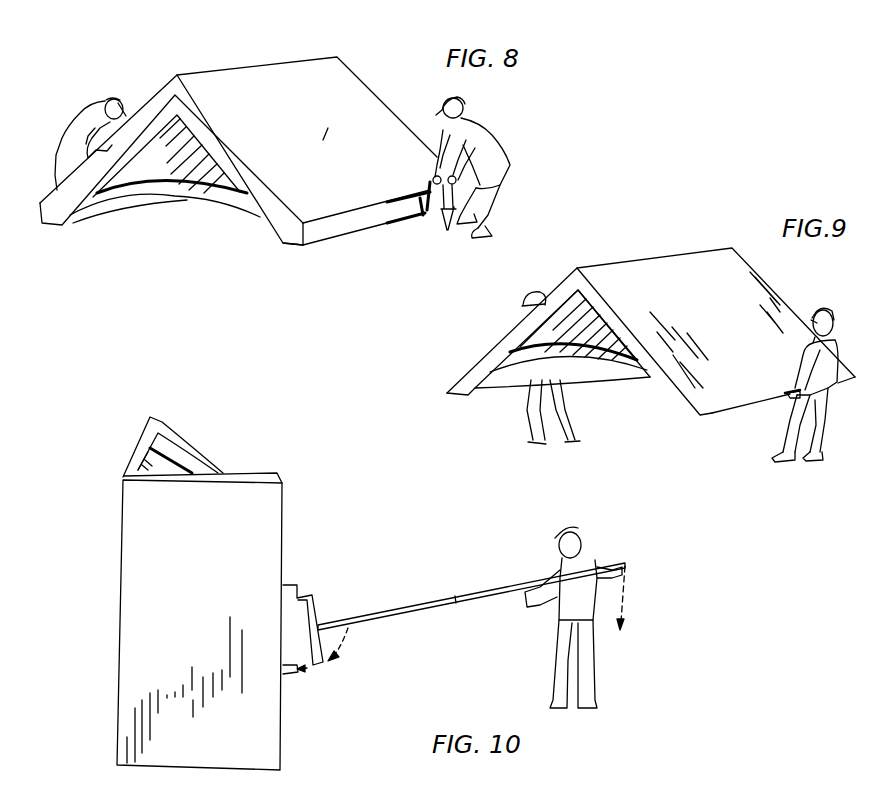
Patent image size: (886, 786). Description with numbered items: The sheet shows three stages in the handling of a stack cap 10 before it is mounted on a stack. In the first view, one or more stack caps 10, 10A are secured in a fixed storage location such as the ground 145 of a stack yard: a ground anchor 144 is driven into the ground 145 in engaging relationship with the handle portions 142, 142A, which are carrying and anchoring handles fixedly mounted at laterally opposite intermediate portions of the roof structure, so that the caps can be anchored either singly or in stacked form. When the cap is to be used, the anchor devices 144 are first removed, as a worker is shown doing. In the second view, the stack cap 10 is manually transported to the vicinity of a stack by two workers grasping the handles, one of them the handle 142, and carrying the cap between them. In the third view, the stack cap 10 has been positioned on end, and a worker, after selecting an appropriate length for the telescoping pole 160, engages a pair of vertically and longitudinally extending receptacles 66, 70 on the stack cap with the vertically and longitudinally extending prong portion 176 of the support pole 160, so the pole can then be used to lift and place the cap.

In FIG. 8, the stack cap 10 is at (147, 137).
In FIG. 9, the stack cap 10 is at (672, 253).
In FIG. 10, the stack cap 10 is at (114, 614).
In FIG. 8, the stack cap 10A is at (283, 62).
In FIG. 8, the handle 142 is at (387, 223).
In FIG. 9, the handle 142 is at (787, 395).
In FIG. 8, the handle portion 142A is at (397, 190).
In FIG. 8, the ground anchor 144 is at (427, 213).
In FIG. 8, the ground surface 145 is at (345, 287).
In FIG. 10, the receptacle 70 is at (305, 587).
In FIG. 10, the telescoping pole 160 is at (439, 593).
In FIG. 10, the prong portion 176 is at (320, 668).
In FIG. 10, the receptacle 66 is at (287, 676).